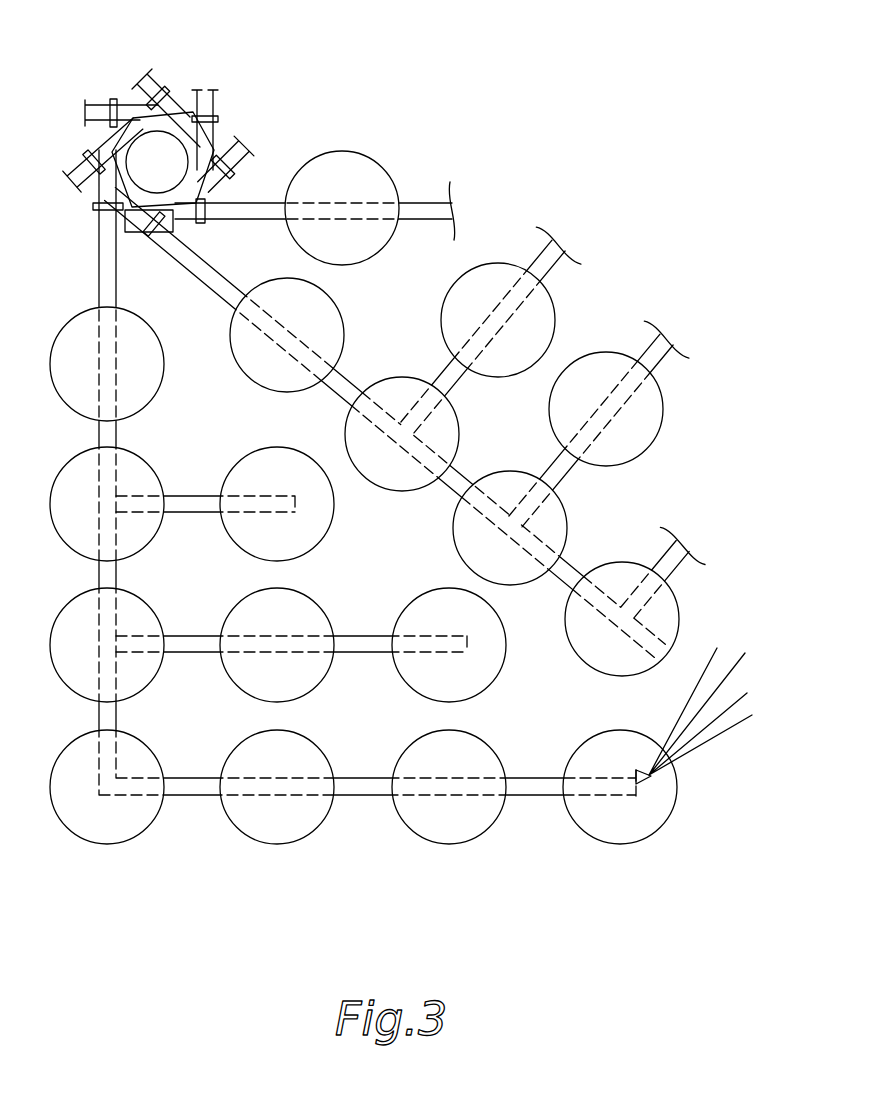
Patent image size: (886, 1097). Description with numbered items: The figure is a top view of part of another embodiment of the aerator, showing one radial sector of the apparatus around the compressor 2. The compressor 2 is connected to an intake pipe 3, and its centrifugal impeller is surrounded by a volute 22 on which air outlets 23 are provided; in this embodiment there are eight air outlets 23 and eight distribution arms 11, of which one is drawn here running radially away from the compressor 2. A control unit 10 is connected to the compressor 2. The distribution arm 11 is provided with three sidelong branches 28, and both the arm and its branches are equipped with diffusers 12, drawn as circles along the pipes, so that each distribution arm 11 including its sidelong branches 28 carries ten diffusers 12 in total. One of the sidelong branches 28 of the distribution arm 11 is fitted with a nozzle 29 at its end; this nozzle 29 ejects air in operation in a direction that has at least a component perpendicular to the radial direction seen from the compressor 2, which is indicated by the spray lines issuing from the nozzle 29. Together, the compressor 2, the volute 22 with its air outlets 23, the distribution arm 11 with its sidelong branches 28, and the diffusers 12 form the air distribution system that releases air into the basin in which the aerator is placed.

The compressor 2 is at (243, 53).
The intake pipe 3 is at (108, 153).
The control unit 10 is at (132, 230).
The distribution arm 11 is at (100, 255).
The diffuser 12 is at (257, 472).
The volute 22 is at (228, 158).
The air outlet 23 is at (160, 94).
The sidelong branch 28 is at (196, 640).
The nozzle 29 is at (643, 783).